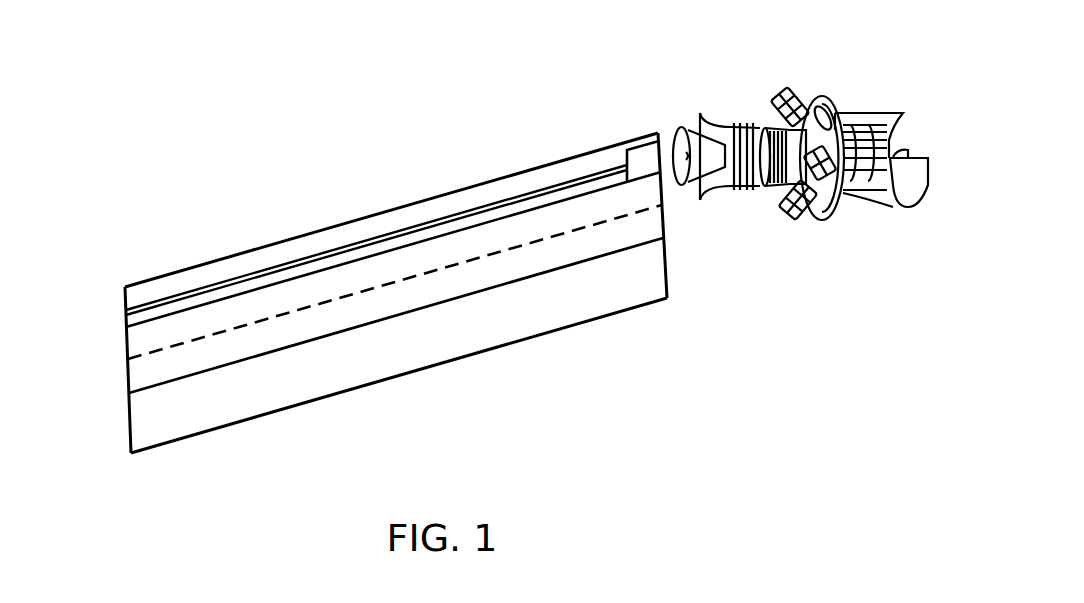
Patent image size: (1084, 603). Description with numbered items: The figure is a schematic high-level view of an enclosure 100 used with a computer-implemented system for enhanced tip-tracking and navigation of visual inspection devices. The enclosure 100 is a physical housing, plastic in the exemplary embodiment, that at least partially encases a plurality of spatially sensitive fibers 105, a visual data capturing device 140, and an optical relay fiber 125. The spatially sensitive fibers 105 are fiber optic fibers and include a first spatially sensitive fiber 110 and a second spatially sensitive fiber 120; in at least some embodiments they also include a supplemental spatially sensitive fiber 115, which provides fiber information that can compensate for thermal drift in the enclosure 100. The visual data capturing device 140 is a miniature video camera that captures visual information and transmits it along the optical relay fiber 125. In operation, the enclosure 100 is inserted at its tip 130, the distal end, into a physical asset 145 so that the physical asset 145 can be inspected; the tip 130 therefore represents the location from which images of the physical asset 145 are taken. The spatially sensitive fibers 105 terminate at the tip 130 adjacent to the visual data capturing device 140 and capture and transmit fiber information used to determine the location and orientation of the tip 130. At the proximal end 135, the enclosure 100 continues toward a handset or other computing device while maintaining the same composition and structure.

The enclosure 100 is at (128, 280).
The spatially sensitive fibers 105 is at (245, 297).
The first spatially sensitive fiber 110 is at (208, 374).
The supplemental spatially sensitive fiber 115 is at (488, 259).
The second spatially sensitive fiber 120 is at (552, 209).
The optical relay fiber 125 is at (372, 236).
The tip 130 is at (672, 266).
The proximal end 135 is at (118, 365).
The visual data capturing device 140 is at (622, 160).
The physical asset 145 is at (828, 70).